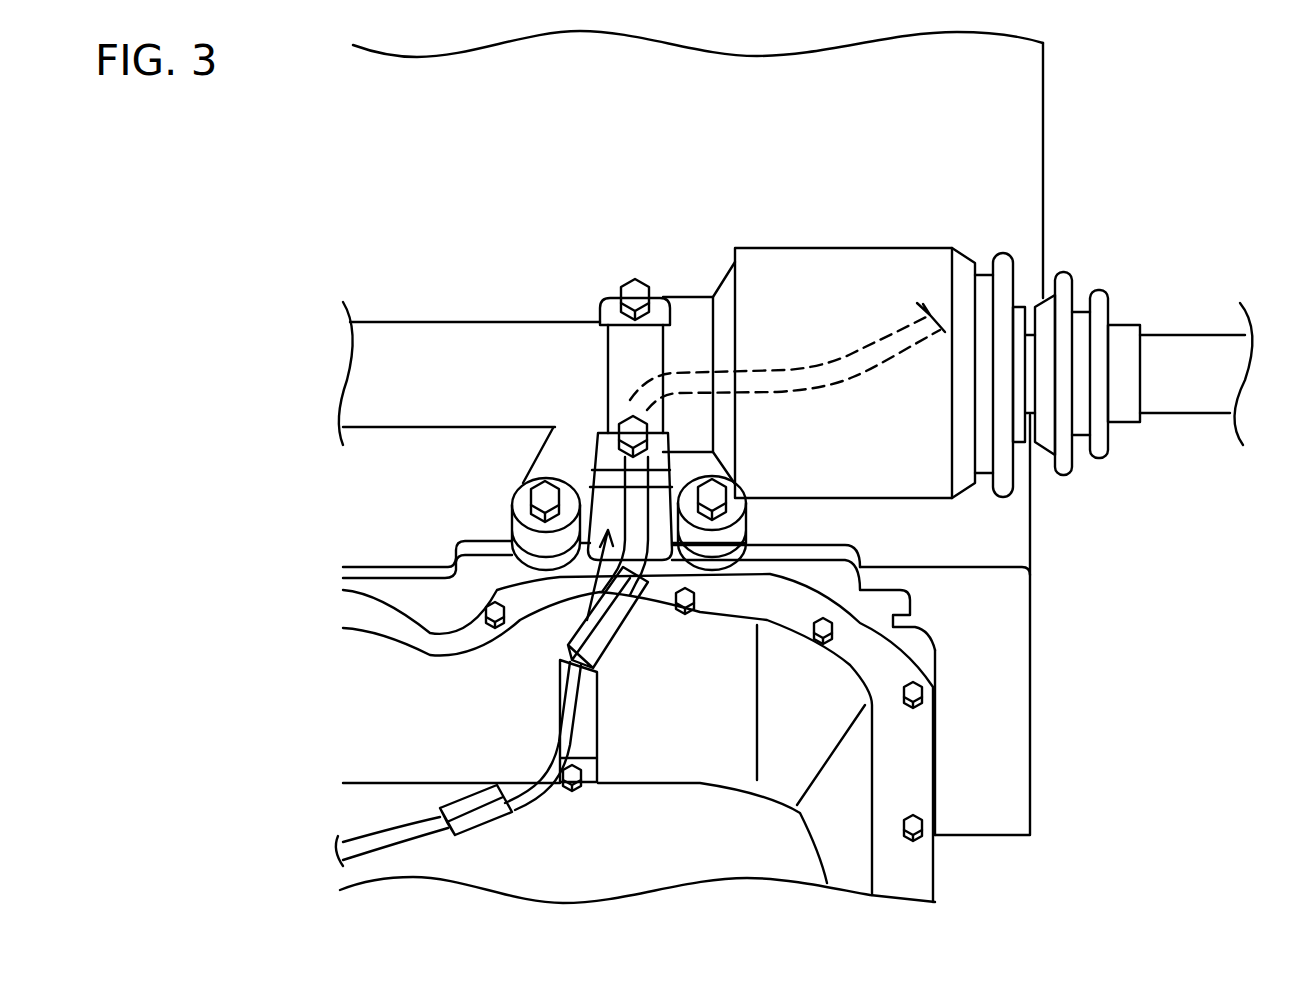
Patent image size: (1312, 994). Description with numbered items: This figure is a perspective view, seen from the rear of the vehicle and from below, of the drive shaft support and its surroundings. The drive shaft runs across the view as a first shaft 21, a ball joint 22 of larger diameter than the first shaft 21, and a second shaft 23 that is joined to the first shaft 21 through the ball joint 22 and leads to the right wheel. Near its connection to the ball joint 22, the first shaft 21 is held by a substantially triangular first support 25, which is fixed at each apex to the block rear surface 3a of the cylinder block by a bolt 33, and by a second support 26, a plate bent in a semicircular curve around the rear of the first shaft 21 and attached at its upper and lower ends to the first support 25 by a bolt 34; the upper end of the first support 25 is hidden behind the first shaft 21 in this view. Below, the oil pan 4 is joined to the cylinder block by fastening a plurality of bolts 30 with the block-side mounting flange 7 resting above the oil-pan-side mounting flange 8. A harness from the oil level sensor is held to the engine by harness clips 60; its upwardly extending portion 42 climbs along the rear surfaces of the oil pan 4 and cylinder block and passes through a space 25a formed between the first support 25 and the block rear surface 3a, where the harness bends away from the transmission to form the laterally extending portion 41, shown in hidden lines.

The block rear surface 3a is at (1026, 512).
The oil pan 4 is at (790, 862).
The block-side mounting flange 7 is at (918, 655).
The oil-pan-side mounting flange 8 is at (918, 750).
The first shaft 21 is at (410, 322).
The ball joint 22 is at (830, 262).
The second shaft 23 is at (1192, 346).
The first support 25 is at (557, 457).
The space 25a is at (590, 582).
The second support 26 is at (618, 358).
The bolt 30 is at (918, 692).
The bolt 33 is at (545, 500).
The bolt 34 is at (635, 290).
The laterally extending portion 41 is at (860, 375).
The upwardly extending portion 42 is at (647, 576).
The harness clip 60 is at (605, 648).